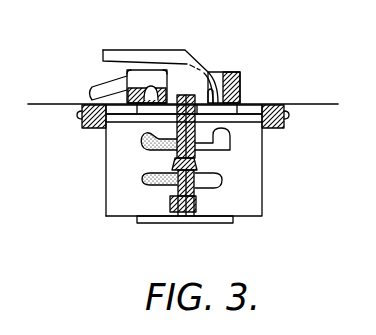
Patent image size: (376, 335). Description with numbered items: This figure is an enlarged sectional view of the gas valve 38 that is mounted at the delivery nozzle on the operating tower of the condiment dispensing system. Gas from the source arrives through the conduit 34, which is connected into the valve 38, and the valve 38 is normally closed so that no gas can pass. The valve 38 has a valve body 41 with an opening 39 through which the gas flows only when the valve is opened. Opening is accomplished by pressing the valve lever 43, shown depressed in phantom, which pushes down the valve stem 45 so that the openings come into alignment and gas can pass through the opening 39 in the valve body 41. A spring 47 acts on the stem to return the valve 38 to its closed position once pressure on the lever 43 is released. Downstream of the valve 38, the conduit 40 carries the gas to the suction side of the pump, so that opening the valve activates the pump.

The conduit 34 is at (276, 128).
The valve 38 is at (203, 70).
The opening 39 is at (242, 128).
The conduit 40 is at (90, 129).
The valve body 41 is at (104, 194).
The valve lever 43 is at (118, 50).
The valve stem 45 is at (173, 150).
The spring 47 is at (170, 182).